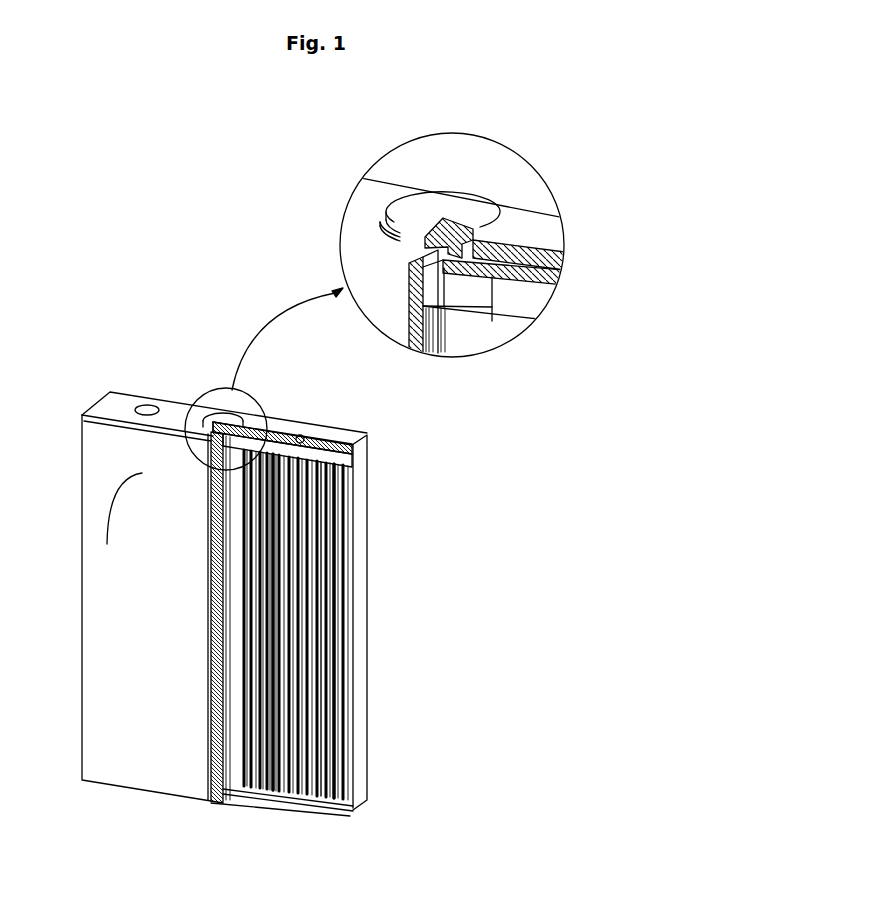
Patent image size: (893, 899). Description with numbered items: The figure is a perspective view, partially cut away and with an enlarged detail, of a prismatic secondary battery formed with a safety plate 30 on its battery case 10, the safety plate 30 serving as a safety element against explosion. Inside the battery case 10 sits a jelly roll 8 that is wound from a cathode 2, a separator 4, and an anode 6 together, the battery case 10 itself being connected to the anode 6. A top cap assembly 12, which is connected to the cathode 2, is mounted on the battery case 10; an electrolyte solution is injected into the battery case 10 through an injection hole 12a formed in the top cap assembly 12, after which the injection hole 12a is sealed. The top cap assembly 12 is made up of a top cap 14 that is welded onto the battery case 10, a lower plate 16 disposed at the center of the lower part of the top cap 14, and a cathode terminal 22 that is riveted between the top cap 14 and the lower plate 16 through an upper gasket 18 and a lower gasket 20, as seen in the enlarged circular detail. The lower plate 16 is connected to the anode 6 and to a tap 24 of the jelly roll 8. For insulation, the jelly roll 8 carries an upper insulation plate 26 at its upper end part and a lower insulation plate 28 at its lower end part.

The cathode 2 is at (333, 615).
The separator 4 is at (328, 583).
The anode 6 is at (322, 635).
The jelly roll 8 is at (342, 813).
The battery case 10 is at (90, 642).
The top cap assembly 12 is at (352, 428).
The injection hole 12a is at (302, 435).
The top cap 14 is at (100, 404).
The lower plate 16 is at (558, 284).
The upper gasket 18 is at (387, 231).
The lower gasket 20 is at (557, 272).
The cathode terminal 22 is at (457, 197).
The tap 24 is at (452, 293).
The upper insulation plate 26 is at (343, 465).
The lower insulation plate 28 is at (347, 800).
The safety plate 30 is at (104, 534).